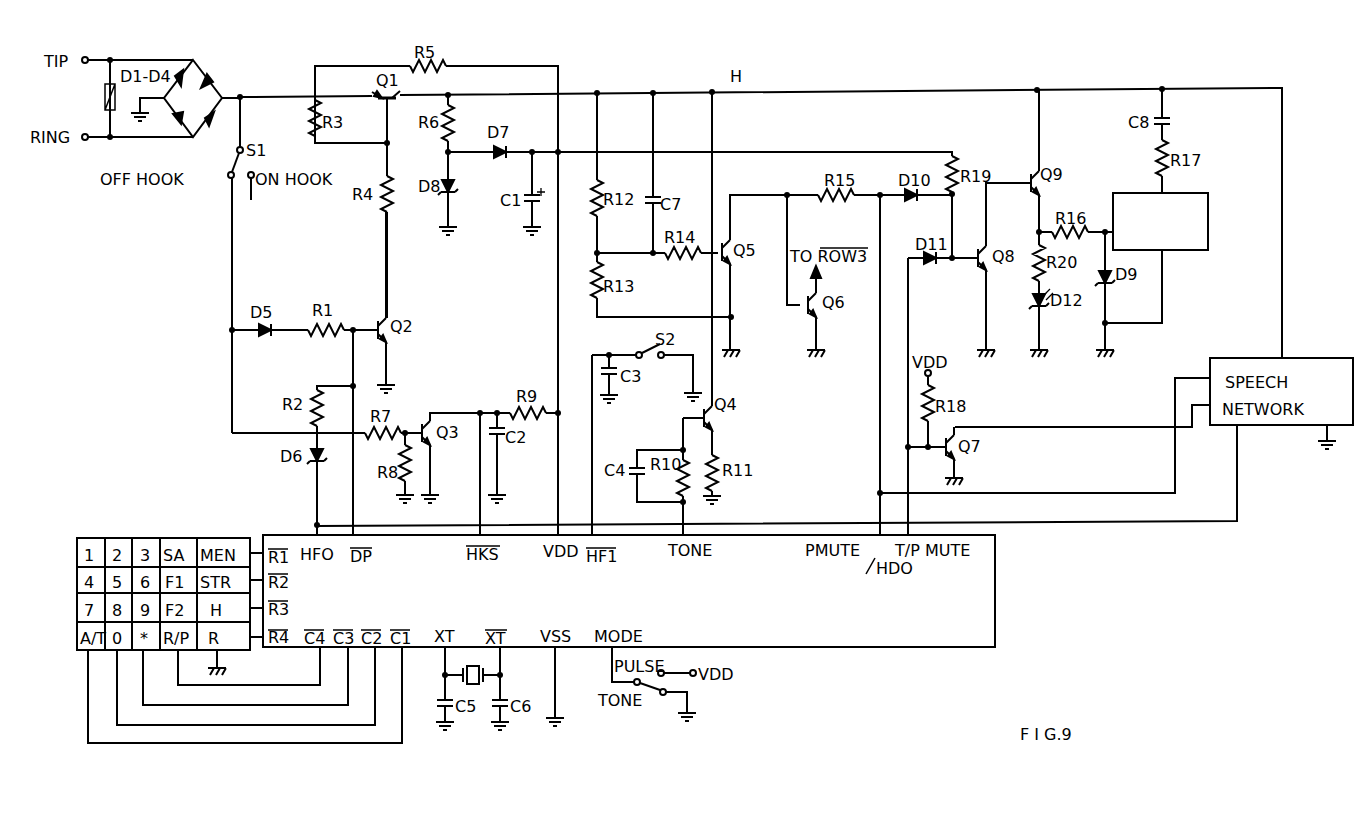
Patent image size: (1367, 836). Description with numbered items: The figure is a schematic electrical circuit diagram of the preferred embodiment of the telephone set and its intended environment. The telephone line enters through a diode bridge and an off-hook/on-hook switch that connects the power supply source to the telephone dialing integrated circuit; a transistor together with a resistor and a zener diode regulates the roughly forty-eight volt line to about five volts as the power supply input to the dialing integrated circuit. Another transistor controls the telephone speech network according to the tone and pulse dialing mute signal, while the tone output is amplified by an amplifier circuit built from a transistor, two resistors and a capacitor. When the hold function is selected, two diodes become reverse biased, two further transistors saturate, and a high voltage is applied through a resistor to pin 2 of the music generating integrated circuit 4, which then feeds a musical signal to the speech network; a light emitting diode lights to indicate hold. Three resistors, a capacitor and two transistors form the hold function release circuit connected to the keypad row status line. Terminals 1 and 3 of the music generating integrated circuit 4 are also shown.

The terminal 1 of block 4 1 is at (1160, 198).
The pin 2 of the music generating integrated circuit 2 is at (1116, 234).
The terminal 3 of block 4 3 is at (1161, 246).
The music generating integrated circuit 4 is at (1193, 244).